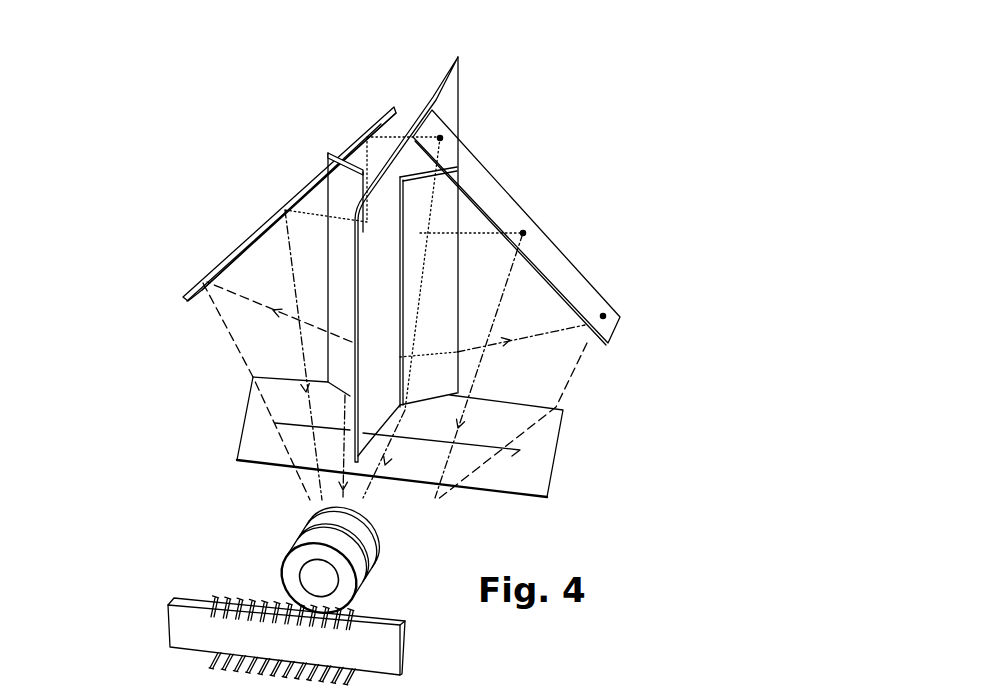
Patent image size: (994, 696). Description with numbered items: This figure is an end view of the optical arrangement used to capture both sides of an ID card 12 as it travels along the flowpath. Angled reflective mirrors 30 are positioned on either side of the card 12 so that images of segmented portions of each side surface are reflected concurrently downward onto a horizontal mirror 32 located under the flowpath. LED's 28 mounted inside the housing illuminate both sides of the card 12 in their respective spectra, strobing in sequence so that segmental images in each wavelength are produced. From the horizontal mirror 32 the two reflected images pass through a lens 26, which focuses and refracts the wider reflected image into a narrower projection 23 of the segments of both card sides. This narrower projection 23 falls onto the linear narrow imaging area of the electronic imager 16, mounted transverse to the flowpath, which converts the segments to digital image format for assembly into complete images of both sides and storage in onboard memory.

The ID card 12 is at (447, 97).
The imager 16 is at (202, 615).
The narrower projection 23 is at (277, 593).
The lens 26 is at (312, 548).
The LED's 28 is at (342, 168).
The angled reflective mirrors 30 is at (230, 247).
The horizontal mirror 32 is at (253, 430).